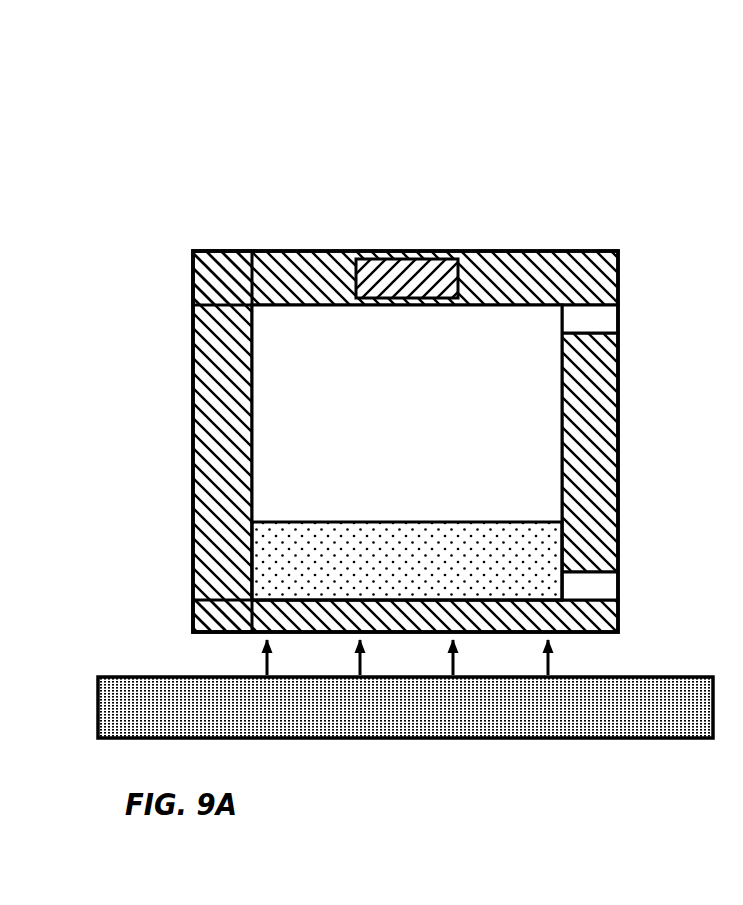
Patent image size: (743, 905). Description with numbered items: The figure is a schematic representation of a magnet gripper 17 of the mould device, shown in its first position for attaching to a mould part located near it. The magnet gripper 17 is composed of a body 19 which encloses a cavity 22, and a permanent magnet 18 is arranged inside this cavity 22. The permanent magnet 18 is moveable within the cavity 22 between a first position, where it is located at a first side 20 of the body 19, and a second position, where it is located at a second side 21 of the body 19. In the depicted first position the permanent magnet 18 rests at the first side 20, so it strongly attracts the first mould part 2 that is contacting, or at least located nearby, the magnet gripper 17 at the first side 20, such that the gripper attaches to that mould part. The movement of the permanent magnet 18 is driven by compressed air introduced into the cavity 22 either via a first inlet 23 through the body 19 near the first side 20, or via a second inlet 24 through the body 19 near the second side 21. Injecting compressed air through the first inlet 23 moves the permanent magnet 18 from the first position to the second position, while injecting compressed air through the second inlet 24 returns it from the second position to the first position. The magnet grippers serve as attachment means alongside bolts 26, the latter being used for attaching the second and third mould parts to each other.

The magnet gripper 17 is at (193, 160).
The body 19 is at (531, 271).
The second side 21 is at (247, 280).
The first side 20 is at (272, 620).
The cavity 22 is at (430, 437).
The second inlet 24 is at (590, 319).
The first inlet 23 is at (593, 587).
The permanent magnet 18 is at (277, 555).
The bolt 26 is at (413, 265).
The first mould part 2 is at (560, 703).